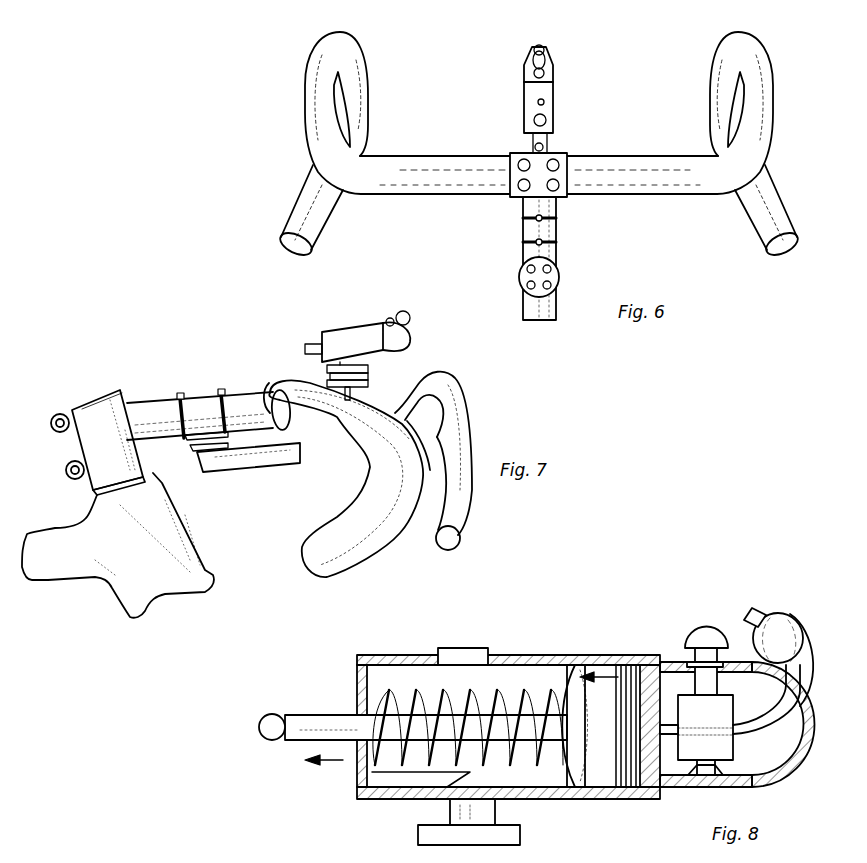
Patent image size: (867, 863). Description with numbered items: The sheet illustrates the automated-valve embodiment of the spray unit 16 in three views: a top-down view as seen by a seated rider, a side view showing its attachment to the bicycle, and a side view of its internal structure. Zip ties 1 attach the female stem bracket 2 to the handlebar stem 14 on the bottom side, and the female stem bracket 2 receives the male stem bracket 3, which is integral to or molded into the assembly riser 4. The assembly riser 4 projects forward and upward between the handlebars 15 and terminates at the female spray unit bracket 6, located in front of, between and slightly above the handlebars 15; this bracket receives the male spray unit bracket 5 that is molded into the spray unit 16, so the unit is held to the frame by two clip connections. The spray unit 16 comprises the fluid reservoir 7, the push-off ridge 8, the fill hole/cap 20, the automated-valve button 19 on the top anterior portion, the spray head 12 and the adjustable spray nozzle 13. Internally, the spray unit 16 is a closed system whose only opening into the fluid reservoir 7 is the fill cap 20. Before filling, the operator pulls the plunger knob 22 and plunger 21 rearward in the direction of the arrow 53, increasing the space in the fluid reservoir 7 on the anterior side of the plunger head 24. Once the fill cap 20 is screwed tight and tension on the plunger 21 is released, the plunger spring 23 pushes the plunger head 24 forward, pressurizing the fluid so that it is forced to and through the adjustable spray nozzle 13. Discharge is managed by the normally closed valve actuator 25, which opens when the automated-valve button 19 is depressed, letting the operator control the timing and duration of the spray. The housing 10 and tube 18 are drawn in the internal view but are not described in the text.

In FIG. 6, the zip ties 1 is at (557, 242).
In FIG. 7, the zip ties 1 is at (214, 388).
In FIG. 7, the female stem bracket 2 is at (187, 438).
In FIG. 7, the male stem bracket 3 is at (193, 450).
In FIG. 6, the assembly riser 4 is at (530, 144).
In FIG. 7, the assembly riser 4 is at (240, 463).
In FIG. 7, the male spray unit bracket 5 is at (320, 356).
In FIG. 8, the male spray unit bracket 5 is at (418, 832).
In FIG. 7, the female spray unit bracket 6 is at (370, 382).
In FIG. 6, the fluid reservoir 7 is at (546, 120).
In FIG. 8, the fluid reservoir 7 is at (630, 790).
In FIG. 6, the push-off ridge 8 is at (544, 102).
In FIG. 8, the housing 10 is at (772, 778).
In FIG. 6, the spray head 12 is at (546, 57).
In FIG. 8, the spray head 12 is at (795, 612).
In FIG. 6, the adjustable spray nozzle 13 is at (534, 50).
In FIG. 8, the adjustable spray nozzle 13 is at (745, 620).
In FIG. 6, the handlebar stem 14 is at (527, 258).
In FIG. 7, the handlebar stem 14 is at (209, 391).
In FIG. 6, the handlebars 15 is at (388, 156).
In FIG. 7, the handlebars 15 is at (370, 550).
In FIG. 6, the spray unit 16 is at (575, 170).
In FIG. 7, the spray unit 16 is at (341, 344).
In FIG. 8, the spray unit 16 is at (556, 671).
In FIG. 8, the tube 18 is at (790, 722).
In FIG. 6, the automated-valve button 19 is at (544, 74).
In FIG. 8, the automated-valve button 19 is at (693, 630).
In FIG. 6, the fill hole/cap 20 is at (524, 118).
In FIG. 8, the fill hole/cap 20 is at (448, 648).
In FIG. 8, the plunger 21 is at (310, 715).
In FIG. 6, the plunger knob 22 is at (545, 147).
In FIG. 8, the plunger knob 22 is at (265, 714).
In FIG. 8, the plunger spring 23 is at (455, 799).
In FIG. 8, the plunger head 24 is at (583, 787).
In FIG. 8, the normally closed valve actuator 25 is at (735, 748).
In FIG. 8, the arrow 53 is at (328, 760).